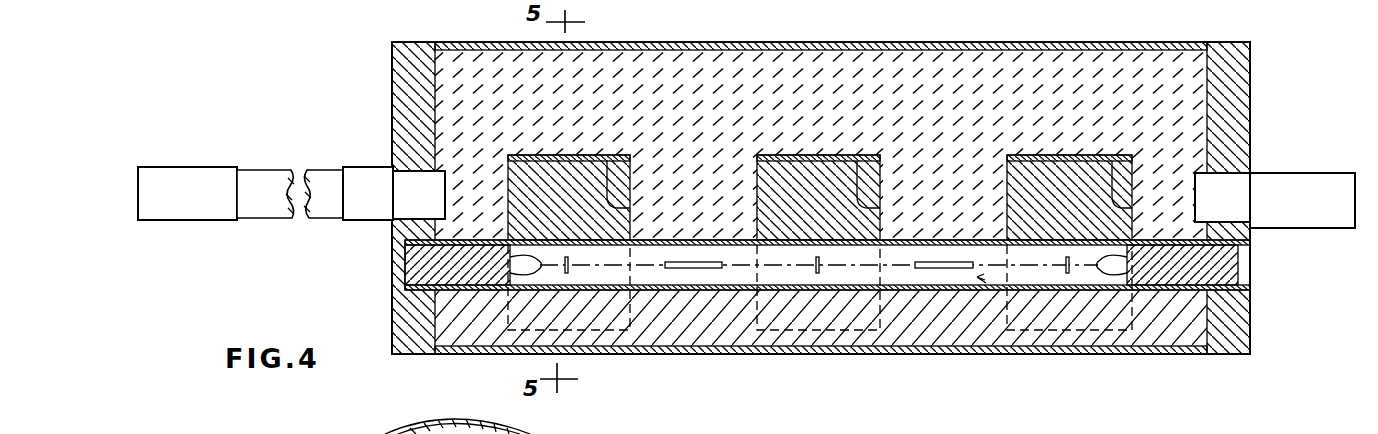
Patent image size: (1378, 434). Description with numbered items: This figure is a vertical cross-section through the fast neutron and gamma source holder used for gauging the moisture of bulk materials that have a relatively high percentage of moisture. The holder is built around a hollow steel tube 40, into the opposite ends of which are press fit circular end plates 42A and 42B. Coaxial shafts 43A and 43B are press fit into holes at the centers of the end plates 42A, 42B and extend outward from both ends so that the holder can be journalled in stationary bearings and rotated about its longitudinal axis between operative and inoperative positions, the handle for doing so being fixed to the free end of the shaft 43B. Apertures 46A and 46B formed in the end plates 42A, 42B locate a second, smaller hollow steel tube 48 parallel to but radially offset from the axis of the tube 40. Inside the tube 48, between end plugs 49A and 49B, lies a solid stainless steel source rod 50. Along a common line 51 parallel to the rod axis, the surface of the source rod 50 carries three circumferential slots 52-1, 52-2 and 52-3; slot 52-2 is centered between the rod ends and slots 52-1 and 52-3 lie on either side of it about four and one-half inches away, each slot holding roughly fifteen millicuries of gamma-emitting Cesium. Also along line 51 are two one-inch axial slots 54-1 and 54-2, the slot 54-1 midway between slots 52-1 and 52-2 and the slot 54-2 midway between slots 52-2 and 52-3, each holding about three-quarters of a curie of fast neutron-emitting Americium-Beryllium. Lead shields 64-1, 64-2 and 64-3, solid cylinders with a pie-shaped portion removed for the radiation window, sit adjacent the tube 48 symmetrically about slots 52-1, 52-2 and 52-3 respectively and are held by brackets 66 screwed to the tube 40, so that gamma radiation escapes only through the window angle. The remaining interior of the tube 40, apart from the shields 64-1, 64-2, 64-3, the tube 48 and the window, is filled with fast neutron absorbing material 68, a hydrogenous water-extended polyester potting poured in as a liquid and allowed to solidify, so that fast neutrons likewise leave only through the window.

The hollow steel tube 40 is at (752, 356).
The circular end plate 42A is at (1243, 117).
The circular end plate 42B is at (393, 95).
The shaft 43A is at (1262, 184).
The shaft 43B is at (281, 149).
The aperture 46A is at (419, 291).
The aperture 46B is at (1223, 298).
The hollow steel tube 48 is at (700, 290).
The end plug 49A is at (1217, 274).
The end plug 49B is at (418, 255).
The source rod 50 is at (986, 283).
The line 51 is at (850, 268).
The circumferential slot 52-1 is at (566, 276).
The circumferential slot 52-2 is at (817, 276).
The circumferential slot 52-3 is at (1068, 276).
The axially extending slot 54-1 is at (665, 268).
The axially extending slot 54-2 is at (915, 270).
The lead shield 64-1 is at (569, 197).
The lead shield 64-2 is at (818, 197).
The lead shield 64-3 is at (1069, 197).
The bracket 66 is at (1120, 198).
The fast neutron absorbing material 68 is at (462, 80).